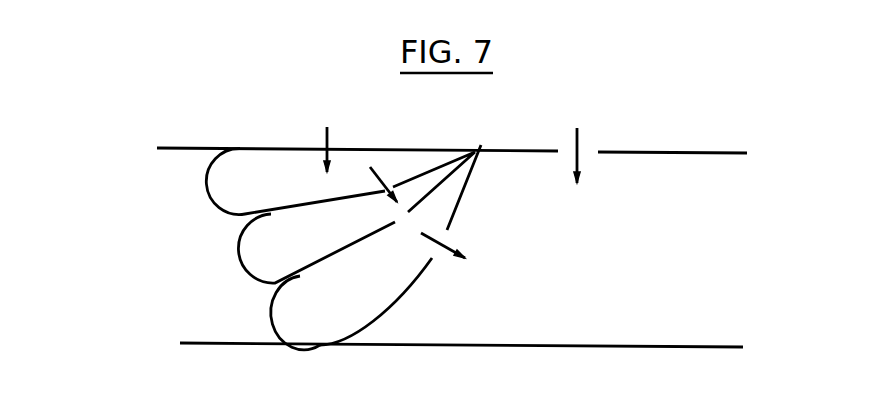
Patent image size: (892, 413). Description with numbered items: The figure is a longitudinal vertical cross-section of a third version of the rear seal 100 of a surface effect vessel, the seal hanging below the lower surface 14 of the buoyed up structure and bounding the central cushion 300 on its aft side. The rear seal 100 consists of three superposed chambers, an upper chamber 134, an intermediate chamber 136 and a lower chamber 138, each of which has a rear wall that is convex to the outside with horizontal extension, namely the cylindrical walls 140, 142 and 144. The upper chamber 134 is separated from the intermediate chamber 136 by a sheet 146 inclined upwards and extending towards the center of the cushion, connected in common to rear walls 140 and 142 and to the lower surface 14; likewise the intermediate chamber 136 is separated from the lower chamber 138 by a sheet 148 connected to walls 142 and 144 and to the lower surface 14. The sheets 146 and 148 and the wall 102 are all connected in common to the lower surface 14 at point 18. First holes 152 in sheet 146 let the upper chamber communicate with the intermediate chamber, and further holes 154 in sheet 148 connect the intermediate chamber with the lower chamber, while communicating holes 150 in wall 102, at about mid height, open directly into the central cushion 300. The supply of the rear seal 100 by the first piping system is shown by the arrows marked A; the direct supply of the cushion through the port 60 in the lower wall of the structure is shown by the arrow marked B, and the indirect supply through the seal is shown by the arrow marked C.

The lower surface of the buoyed up structure 14 is at (708, 157).
The common connection point 18 is at (477, 147).
The port 60 is at (590, 150).
The rear seal apparatus 100 is at (145, 285).
The wall 102 is at (412, 285).
The upper chamber 134 is at (233, 187).
The intermediate chamber 136 is at (262, 255).
The lower chamber 138 is at (312, 310).
The rear wall of the upper chamber 140 is at (206, 172).
The rear wall of the intermediate chamber 142 is at (238, 240).
The rear wall of the lower chamber 144 is at (287, 303).
The sheet 146 is at (301, 212).
The sheet 148 is at (334, 258).
The communicating holes 150 is at (463, 238).
The first holes 152 is at (396, 182).
The slot 154 is at (407, 218).
The central cushion 300 is at (673, 279).
The arrows marked A is at (327, 137).
The arrows marked B is at (580, 178).
The arrows marked C is at (465, 259).